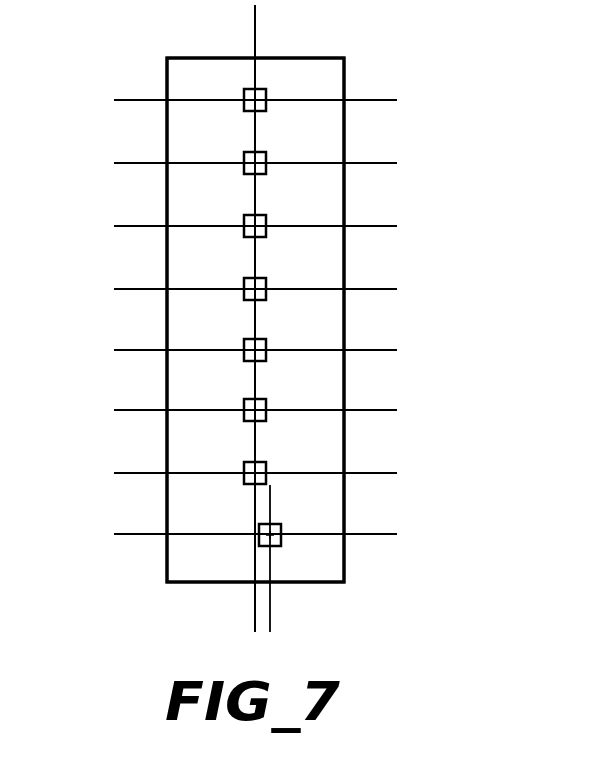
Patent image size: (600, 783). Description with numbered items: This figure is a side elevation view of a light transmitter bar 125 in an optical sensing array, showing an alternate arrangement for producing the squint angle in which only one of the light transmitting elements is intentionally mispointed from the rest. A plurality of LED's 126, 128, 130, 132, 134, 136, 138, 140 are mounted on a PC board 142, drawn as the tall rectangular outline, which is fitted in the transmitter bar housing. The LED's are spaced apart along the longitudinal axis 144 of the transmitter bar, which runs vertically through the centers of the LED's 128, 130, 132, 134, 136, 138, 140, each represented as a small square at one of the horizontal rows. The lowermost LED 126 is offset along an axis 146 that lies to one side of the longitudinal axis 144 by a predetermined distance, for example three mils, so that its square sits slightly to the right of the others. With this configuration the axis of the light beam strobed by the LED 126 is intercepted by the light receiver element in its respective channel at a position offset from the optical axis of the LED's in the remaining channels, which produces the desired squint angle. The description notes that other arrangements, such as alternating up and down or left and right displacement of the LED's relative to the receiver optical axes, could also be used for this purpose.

The sensor array board 125 is at (196, 586).
The LED 126 is at (281, 527).
The LED 128 is at (244, 479).
The LED 130 is at (266, 402).
The LED 132 is at (244, 356).
The LED 134 is at (266, 281).
The LED 136 is at (244, 232).
The LED 138 is at (266, 155).
The LED 140 is at (244, 107).
The PC board 142 is at (191, 72).
The longitudinal axis 144 is at (258, 33).
The axis 146 is at (272, 612).